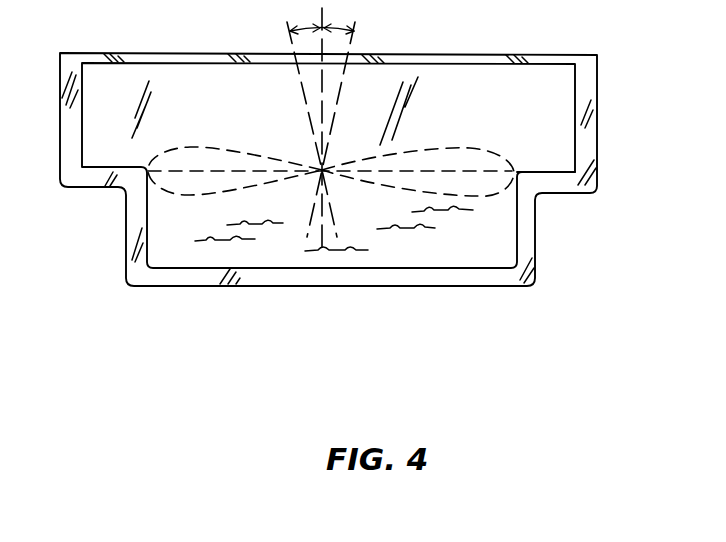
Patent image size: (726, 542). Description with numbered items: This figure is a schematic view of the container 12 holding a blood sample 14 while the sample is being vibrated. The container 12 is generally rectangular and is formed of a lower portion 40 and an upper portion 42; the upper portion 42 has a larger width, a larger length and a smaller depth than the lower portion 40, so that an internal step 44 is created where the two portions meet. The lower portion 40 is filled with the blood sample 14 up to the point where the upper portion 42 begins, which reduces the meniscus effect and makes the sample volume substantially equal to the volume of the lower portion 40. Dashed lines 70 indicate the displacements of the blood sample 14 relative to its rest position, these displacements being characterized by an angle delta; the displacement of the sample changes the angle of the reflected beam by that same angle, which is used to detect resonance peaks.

The container 12 is at (535, 250).
The blood sample 14 is at (178, 240).
The lower portion 40 is at (453, 240).
The upper portion 42 is at (560, 102).
The internal step 44 is at (543, 168).
The dashed lines 70 is at (418, 152).